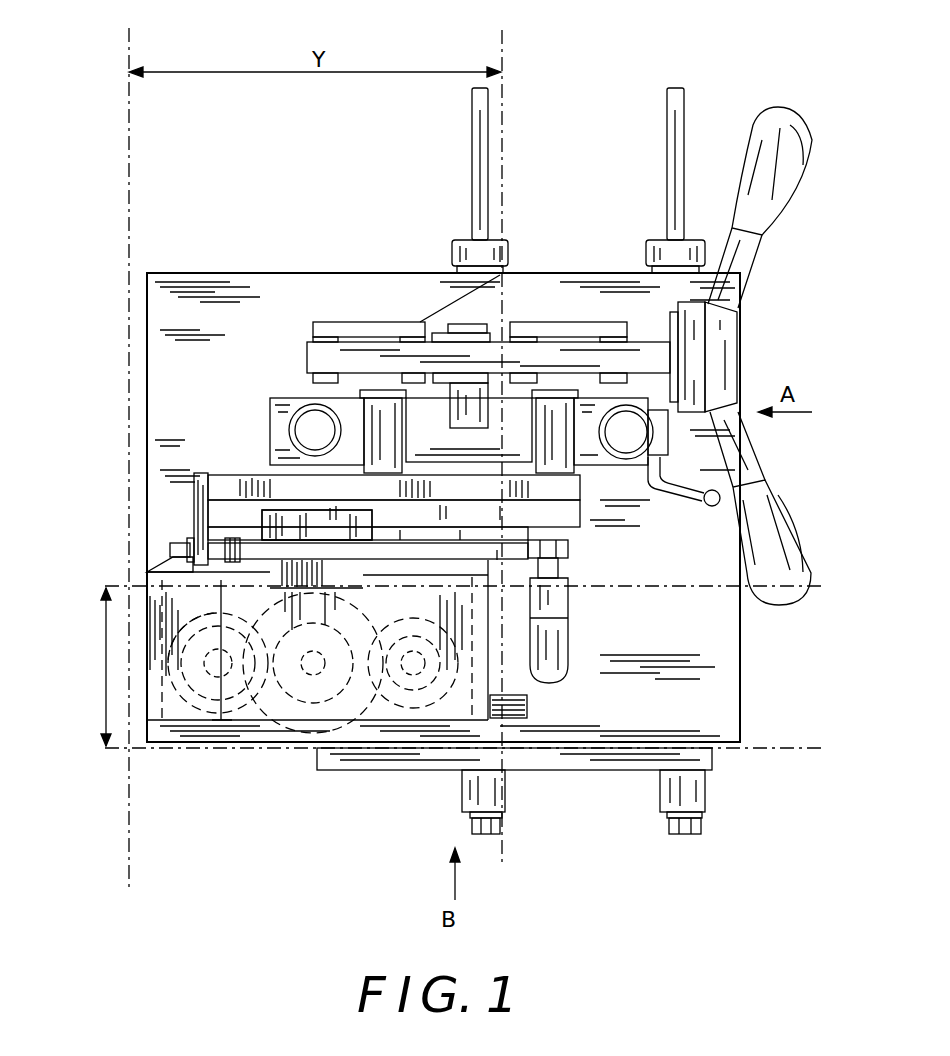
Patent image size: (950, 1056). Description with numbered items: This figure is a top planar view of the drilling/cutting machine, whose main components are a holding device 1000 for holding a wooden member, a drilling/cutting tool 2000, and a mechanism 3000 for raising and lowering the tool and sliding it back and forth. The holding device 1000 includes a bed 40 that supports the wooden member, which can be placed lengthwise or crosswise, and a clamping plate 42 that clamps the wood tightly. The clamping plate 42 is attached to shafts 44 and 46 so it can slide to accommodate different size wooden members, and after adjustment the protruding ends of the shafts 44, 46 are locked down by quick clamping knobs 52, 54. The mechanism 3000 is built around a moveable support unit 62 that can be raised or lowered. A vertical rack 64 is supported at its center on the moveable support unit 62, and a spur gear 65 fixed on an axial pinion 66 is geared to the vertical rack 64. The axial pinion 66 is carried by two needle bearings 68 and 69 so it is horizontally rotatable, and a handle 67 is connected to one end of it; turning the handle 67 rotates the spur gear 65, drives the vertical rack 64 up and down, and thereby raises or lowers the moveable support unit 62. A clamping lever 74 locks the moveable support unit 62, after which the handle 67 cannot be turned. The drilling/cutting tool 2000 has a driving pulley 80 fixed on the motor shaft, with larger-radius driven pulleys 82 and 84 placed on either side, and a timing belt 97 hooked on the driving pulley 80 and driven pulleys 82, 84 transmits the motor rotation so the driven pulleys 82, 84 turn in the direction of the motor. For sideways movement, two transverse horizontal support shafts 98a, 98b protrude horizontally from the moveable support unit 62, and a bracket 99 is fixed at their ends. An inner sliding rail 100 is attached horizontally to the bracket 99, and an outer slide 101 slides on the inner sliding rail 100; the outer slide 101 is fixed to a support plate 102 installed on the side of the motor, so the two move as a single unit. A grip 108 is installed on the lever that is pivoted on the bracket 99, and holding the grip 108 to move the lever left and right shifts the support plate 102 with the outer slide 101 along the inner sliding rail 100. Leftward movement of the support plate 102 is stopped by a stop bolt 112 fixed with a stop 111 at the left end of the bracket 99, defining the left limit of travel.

The bed 40 is at (722, 727).
The clamping plate 42 is at (597, 752).
The shaft 44 is at (471, 122).
The shaft 46 is at (666, 108).
The quick clamping knob 52 is at (508, 238).
The quick clamping knob 54 is at (696, 238).
The moveable support unit 62 is at (593, 457).
The vertical rack 64 is at (473, 413).
The spur gear 65 is at (468, 338).
The axial pinion 66 is at (313, 360).
The handle 67 is at (795, 115).
The needle bearing 68 is at (617, 323).
The needle bearing 69 is at (337, 330).
The clamping lever 74 is at (698, 500).
The driving pulley 80 is at (310, 695).
The driven pulley 82 is at (227, 705).
The driven pulley 84 is at (422, 703).
The timing belt 97 is at (177, 693).
The transverse horizontal support shaft 98a is at (562, 410).
The transverse horizontal support shaft 98b is at (382, 322).
The bracket 99 is at (216, 480).
The inner sliding rail 100 is at (240, 503).
The outer slide 101 is at (278, 527).
The support plate 102 is at (499, 550).
The grip 108 is at (557, 640).
The stop 111 is at (197, 487).
The stop bolt 112 is at (170, 550).
The holding device 1000 is at (750, 690).
The drilling/cutting tool 2000 is at (103, 608).
The mechanism 3000 is at (122, 390).